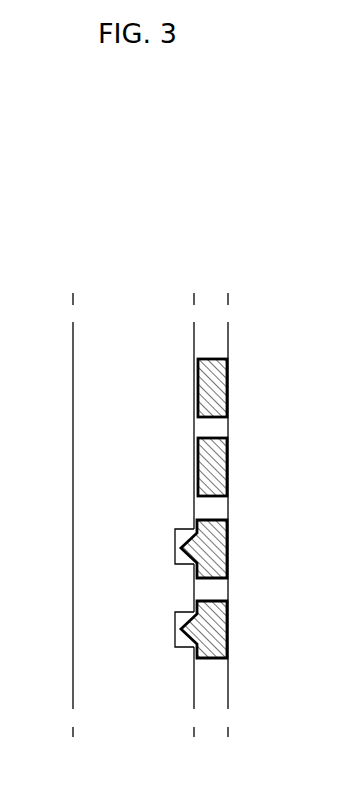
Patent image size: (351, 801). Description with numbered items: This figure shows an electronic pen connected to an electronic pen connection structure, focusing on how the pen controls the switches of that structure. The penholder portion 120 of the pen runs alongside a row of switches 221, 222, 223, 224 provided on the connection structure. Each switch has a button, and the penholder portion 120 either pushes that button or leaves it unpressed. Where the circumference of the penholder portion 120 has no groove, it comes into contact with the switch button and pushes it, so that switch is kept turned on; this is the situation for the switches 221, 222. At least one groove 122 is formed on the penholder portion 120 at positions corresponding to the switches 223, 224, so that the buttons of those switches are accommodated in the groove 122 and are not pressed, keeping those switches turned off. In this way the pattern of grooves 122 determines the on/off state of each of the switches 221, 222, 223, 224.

The penholder portion 120 is at (79, 366).
The groove 122 is at (177, 546).
The switch 221 is at (226, 385).
The switch 222 is at (226, 466).
The switch 223 is at (228, 547).
The switch 224 is at (228, 627).